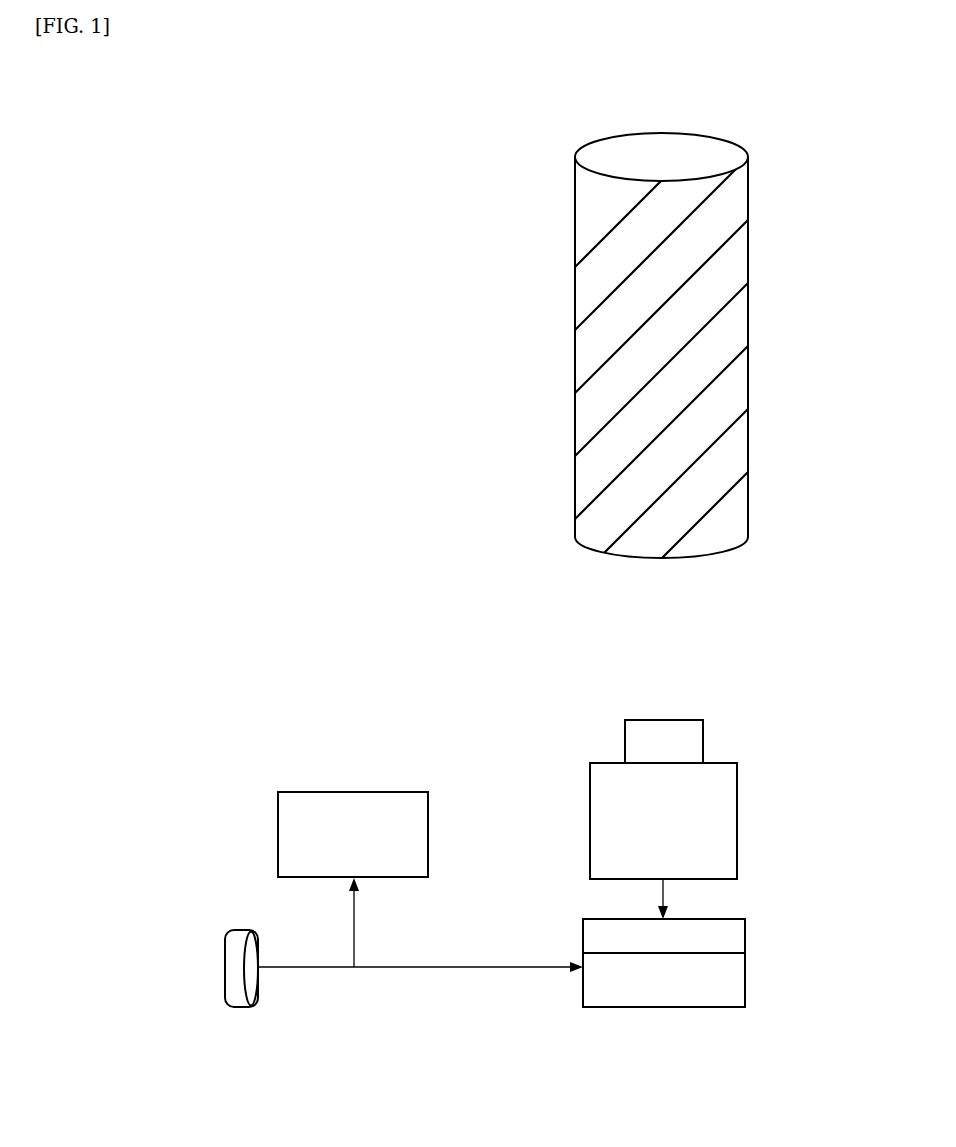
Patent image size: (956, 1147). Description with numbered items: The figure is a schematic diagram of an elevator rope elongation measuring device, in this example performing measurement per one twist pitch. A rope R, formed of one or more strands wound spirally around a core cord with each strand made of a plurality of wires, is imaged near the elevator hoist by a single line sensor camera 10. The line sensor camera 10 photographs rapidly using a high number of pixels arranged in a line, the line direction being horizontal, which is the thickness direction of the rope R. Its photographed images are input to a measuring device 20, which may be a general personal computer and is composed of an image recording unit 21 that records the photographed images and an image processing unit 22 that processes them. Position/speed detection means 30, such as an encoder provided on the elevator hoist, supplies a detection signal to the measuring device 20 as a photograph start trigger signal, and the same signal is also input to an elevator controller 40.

The rope R is at (601, 527).
The line sensor camera 10 is at (598, 784).
The measuring device 20 is at (709, 1012).
The image recording unit 21 is at (744, 936).
The image processing unit 22 is at (744, 974).
The position/speed detection means 30 is at (240, 931).
The elevator controller 40 is at (430, 860).